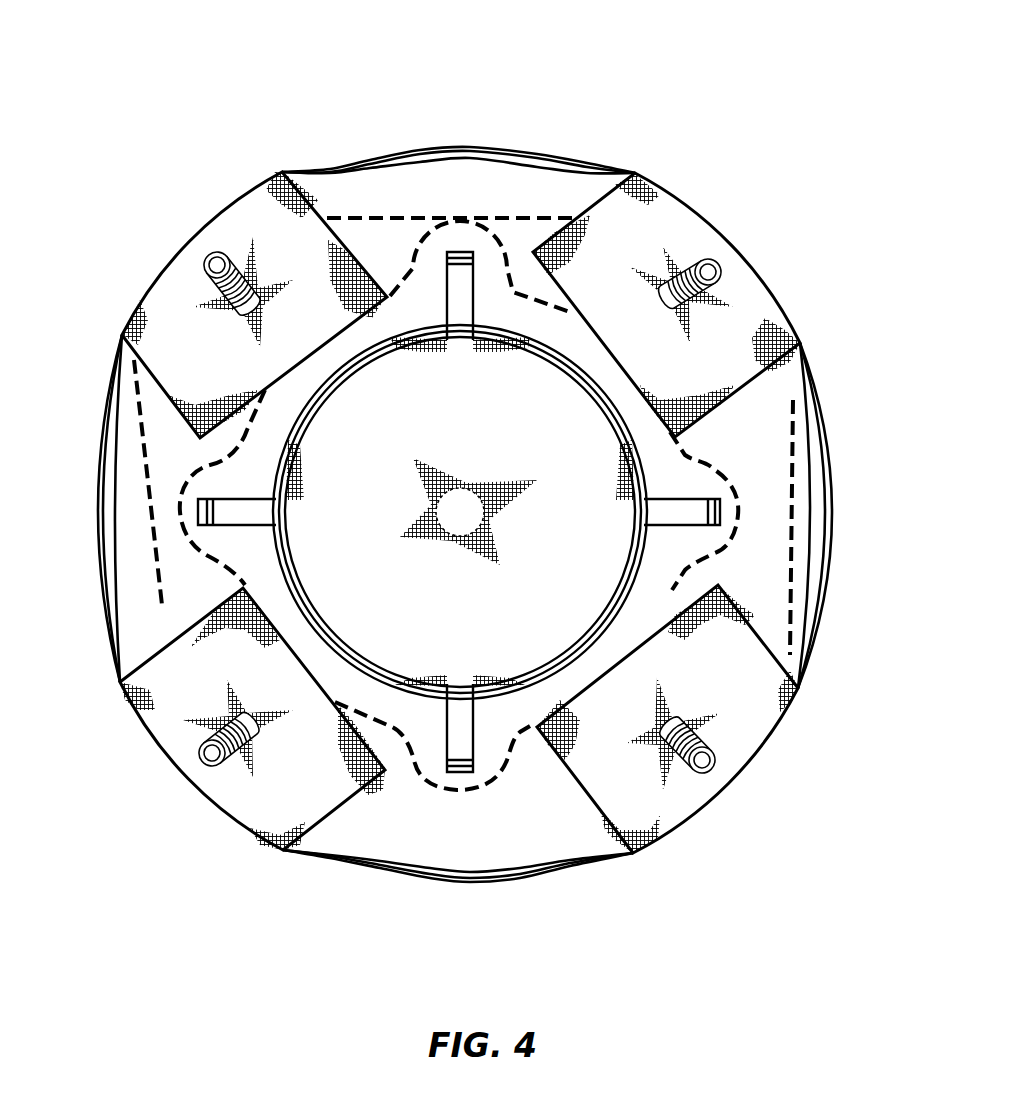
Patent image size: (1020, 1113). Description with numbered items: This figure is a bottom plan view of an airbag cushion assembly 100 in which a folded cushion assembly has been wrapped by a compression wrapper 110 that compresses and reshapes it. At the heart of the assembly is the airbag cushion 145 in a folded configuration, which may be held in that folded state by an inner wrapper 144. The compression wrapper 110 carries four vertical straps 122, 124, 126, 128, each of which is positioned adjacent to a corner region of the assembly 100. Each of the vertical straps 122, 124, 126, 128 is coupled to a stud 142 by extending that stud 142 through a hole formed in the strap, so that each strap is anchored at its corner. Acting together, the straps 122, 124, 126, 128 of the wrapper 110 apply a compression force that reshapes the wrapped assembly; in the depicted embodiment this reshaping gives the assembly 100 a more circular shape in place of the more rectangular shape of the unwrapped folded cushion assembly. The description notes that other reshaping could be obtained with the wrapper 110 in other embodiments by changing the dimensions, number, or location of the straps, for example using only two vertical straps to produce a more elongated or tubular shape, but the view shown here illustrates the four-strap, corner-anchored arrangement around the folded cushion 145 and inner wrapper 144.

The airbag cushion assembly 100 is at (757, 131).
The compression wrapper 110 is at (179, 252).
The vertical strap 122 is at (260, 215).
The vertical strap 124 is at (292, 782).
The vertical strap 126 is at (637, 787).
The vertical strap 128 is at (763, 313).
The stud 142 is at (216, 262).
The inner wrapper 144 is at (748, 432).
The airbag cushion 145 is at (470, 372).